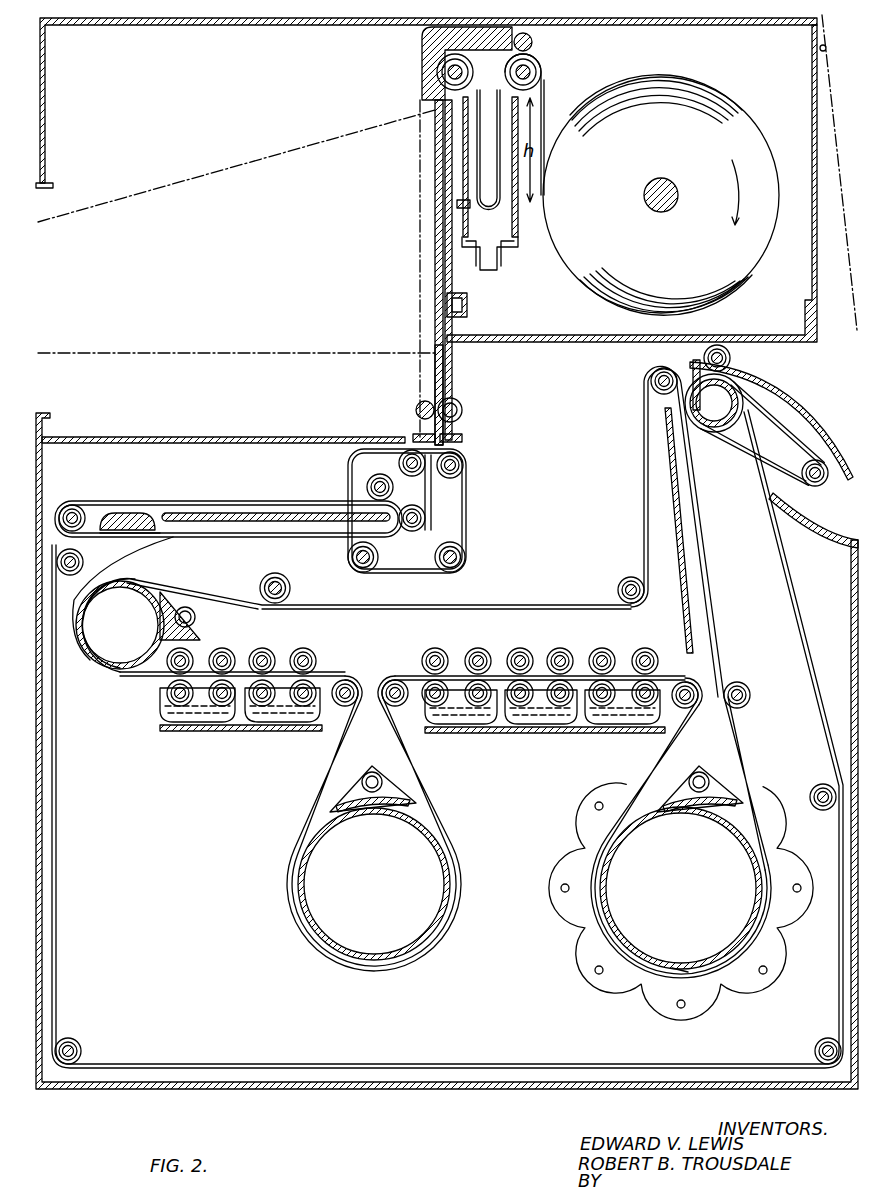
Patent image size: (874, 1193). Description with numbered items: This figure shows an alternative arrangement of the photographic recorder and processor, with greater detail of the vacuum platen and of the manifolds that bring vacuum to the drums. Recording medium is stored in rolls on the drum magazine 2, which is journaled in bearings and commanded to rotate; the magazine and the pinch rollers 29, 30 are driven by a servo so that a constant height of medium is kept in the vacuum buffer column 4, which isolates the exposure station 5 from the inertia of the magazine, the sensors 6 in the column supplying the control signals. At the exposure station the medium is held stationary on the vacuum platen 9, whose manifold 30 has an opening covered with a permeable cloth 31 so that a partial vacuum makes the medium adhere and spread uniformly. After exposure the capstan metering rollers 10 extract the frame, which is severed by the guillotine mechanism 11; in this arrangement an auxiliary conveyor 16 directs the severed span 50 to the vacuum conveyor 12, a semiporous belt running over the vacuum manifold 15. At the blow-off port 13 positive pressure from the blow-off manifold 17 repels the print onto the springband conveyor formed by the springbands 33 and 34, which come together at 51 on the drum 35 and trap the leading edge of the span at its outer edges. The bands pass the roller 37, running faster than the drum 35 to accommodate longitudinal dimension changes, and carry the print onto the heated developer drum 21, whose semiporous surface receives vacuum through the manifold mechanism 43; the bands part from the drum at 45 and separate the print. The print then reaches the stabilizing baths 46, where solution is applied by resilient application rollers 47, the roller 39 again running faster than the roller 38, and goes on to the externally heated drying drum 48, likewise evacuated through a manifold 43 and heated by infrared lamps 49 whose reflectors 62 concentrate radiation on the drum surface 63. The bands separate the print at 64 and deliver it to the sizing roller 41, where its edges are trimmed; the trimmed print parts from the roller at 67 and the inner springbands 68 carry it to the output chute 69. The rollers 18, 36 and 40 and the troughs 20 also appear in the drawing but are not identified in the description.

The drum magazine 2 is at (755, 132).
The vacuum buffer column 4 is at (518, 238).
The exposure station 5 is at (408, 213).
The sensors 6 is at (470, 208).
The vacuum platen 9 is at (455, 372).
The capstan metering rollers 10 is at (418, 405).
The guillotine mechanism 11 is at (403, 430).
The vacuum conveyor 12 is at (280, 540).
The blow-off port 13 is at (136, 514).
The manifold 15 is at (300, 514).
The auxiliary conveyor 16 is at (468, 512).
The blow-off manifold 17 is at (128, 505).
The pinch rollers 18 is at (195, 660).
The troughs 20 is at (205, 722).
The heated developer drum 21 is at (304, 903).
The pinch roller 29 is at (533, 44).
The manifold 30 is at (542, 70).
The permeable cloth 31 is at (434, 280).
The springband 33 is at (58, 834).
The springband 34 is at (222, 598).
The drum 35 is at (108, 668).
The roller 36 is at (64, 552).
The roller 37 is at (352, 680).
The roller 38 is at (396, 678).
The roller 39 is at (684, 680).
The roller 40 is at (741, 683).
The sizing roller 41 is at (714, 396).
The manifold mechanism 43 is at (368, 772).
The separation point 45 is at (440, 826).
The stabilizing baths 46 is at (500, 722).
The resilient application rollers 47 is at (445, 660).
The drying drum 48 is at (778, 930).
The infrared heaters 49 is at (593, 810).
The severed span 50 is at (140, 548).
The joining point 51 is at (545, 100).
The reflector 62 is at (562, 940).
The drum surface 63 is at (680, 970).
The separation point 64 is at (764, 845).
The parting point 67 is at (742, 386).
The inner springbands 68 is at (792, 445).
The output chute 69 is at (838, 545).